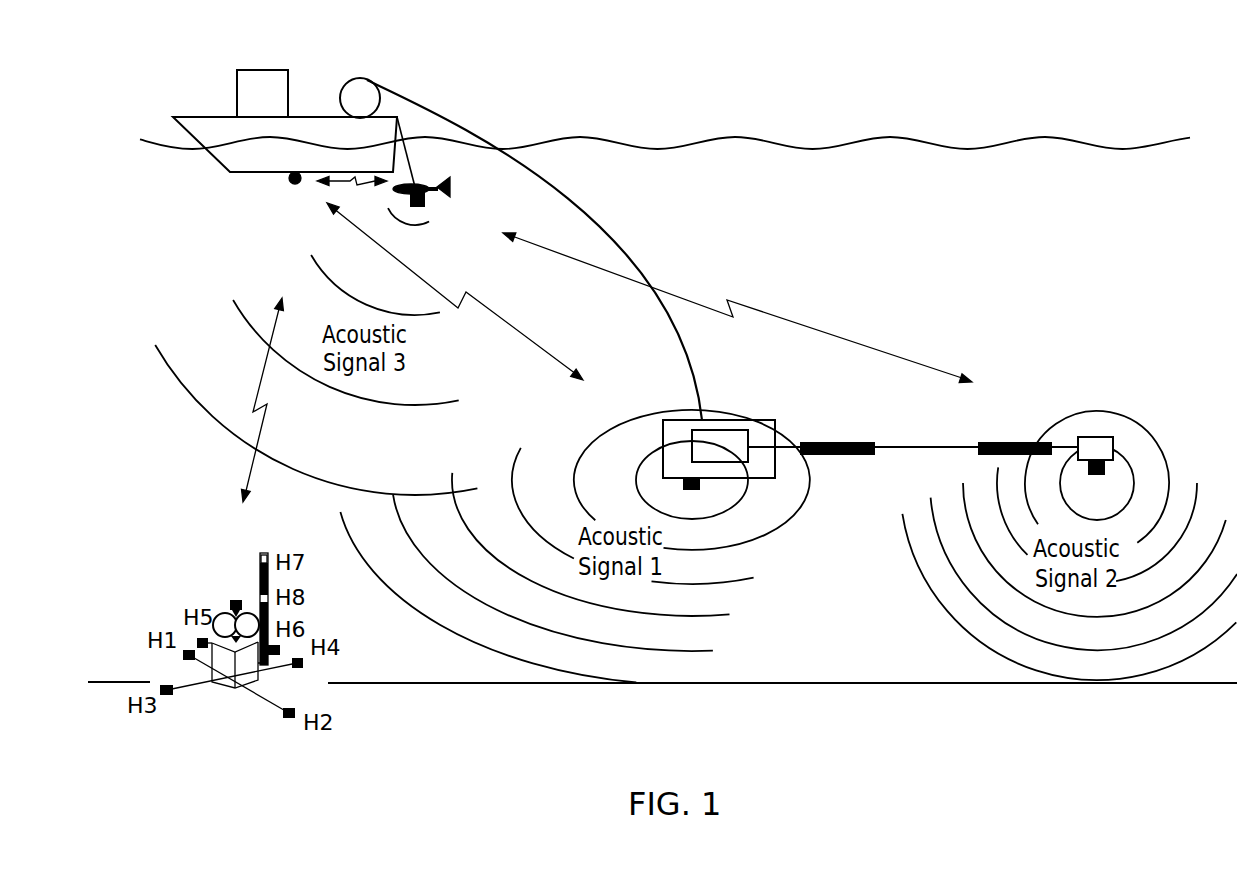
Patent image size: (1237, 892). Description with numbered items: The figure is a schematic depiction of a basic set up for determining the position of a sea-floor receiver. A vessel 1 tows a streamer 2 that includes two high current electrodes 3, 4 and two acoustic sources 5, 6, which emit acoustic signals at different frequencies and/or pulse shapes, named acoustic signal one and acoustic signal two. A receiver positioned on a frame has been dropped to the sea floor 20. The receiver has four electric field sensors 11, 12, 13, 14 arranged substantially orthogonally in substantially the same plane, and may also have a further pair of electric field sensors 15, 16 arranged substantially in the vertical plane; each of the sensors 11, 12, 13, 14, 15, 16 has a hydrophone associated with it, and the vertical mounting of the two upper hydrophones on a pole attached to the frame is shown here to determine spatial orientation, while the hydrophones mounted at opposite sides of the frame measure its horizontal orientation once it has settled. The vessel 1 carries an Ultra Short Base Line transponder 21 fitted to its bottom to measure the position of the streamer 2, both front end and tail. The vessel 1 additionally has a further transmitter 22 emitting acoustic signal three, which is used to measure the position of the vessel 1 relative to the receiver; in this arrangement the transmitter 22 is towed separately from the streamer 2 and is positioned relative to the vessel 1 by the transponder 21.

The vessel 1 is at (268, 70).
The towing streamer 2 is at (962, 446).
The high current electrode 3 is at (837, 456).
The high current electrode 4 is at (1017, 443).
The acoustic source 5 is at (694, 490).
The acoustic source 6 is at (1106, 467).
The electric field sensor 11 is at (183, 655).
The electric field sensor 12 is at (283, 716).
The electric field sensor 13 is at (167, 695).
The electric field sensor 14 is at (303, 663).
The electric field sensor 15 is at (260, 597).
The electric field sensor 16 is at (260, 558).
The sea floor 20 is at (943, 684).
The USBL transponder 21 is at (291, 181).
The transmitter 22 is at (447, 197).